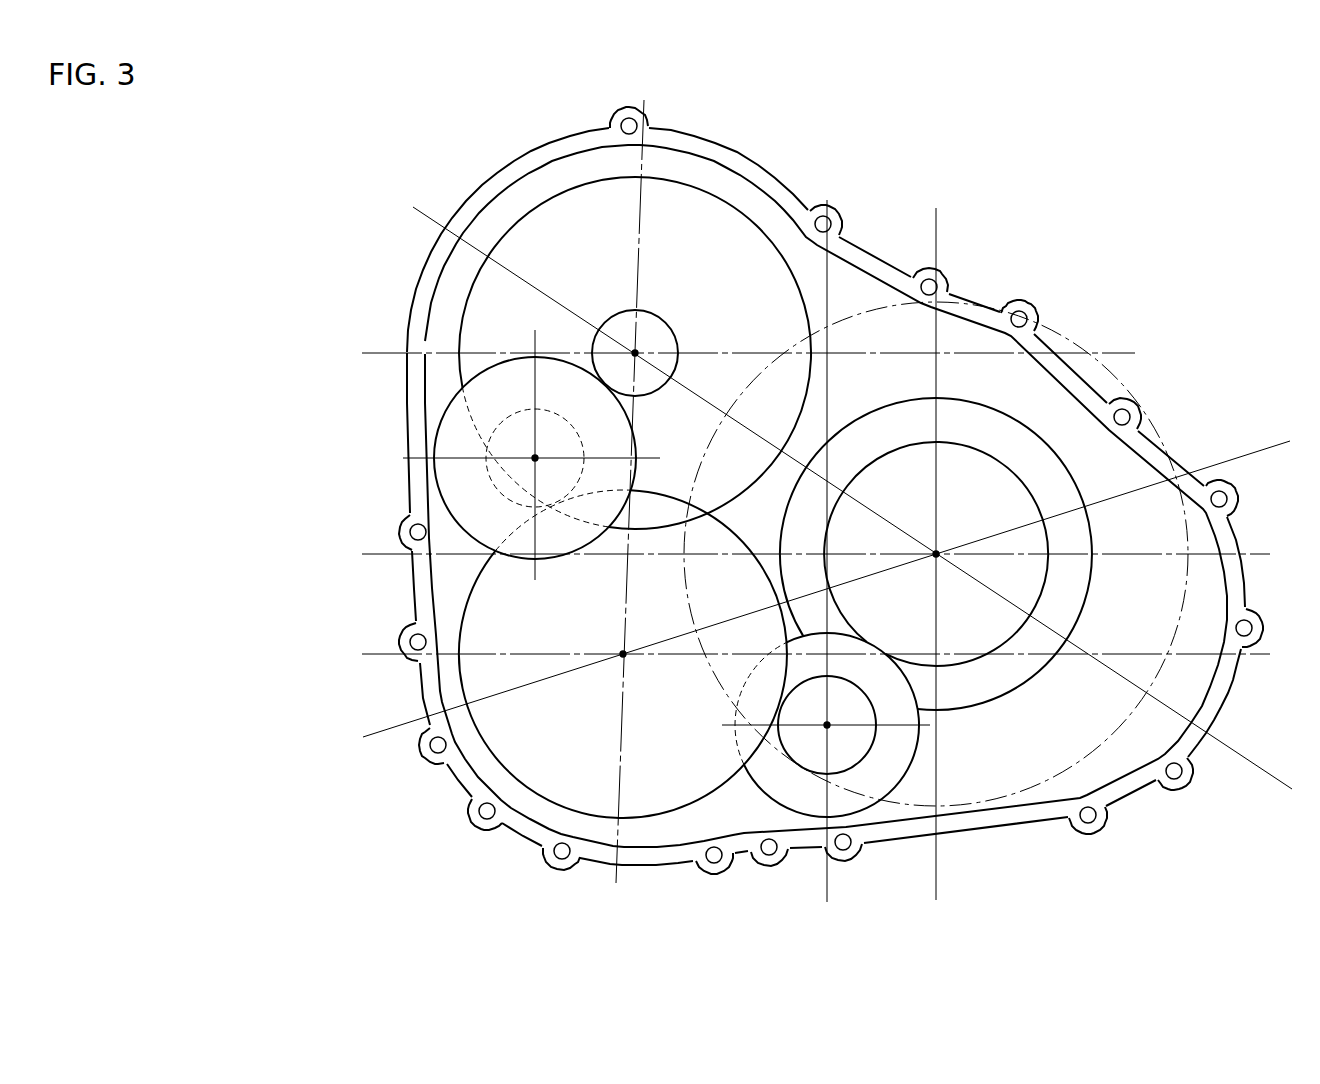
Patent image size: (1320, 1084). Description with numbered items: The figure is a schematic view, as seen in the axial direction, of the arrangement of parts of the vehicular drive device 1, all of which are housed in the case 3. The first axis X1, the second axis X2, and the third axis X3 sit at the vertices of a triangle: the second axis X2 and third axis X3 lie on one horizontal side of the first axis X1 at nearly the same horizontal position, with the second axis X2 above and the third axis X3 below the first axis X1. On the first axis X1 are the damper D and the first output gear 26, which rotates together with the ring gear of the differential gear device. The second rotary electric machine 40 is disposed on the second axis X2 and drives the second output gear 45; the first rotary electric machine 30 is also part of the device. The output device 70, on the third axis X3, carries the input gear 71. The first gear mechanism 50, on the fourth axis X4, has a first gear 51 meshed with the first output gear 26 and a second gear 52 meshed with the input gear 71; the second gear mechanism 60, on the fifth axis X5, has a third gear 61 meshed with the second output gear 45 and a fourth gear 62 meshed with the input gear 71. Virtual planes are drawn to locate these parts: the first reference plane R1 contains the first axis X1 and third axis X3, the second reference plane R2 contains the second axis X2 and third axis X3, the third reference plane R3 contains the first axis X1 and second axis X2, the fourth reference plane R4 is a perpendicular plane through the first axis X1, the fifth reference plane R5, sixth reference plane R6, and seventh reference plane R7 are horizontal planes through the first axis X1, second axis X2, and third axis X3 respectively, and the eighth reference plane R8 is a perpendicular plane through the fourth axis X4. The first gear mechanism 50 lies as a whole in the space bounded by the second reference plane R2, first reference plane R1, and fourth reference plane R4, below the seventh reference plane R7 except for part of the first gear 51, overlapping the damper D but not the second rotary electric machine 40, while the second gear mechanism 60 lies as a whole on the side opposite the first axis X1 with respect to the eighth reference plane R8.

The vehicular drive device 1 is at (322, 251).
The case 3 is at (906, 262).
The first output gear 26 is at (1043, 600).
The first rotary electric machine 30 is at (1033, 412).
The second rotary electric machine 40 is at (727, 191).
The second output gear 45 is at (657, 326).
The first gear mechanism 50 is at (918, 790).
The first gear 51 is at (882, 797).
The second gear 52 is at (878, 738).
The second gear mechanism 60 is at (421, 491).
The third gear 61 is at (457, 397).
The fourth gear 62 is at (484, 444).
The output device 70 is at (498, 780).
The input gear 71 is at (466, 604).
The damper D is at (1195, 574).
The first reference plane R1 is at (380, 733).
The second reference plane R2 is at (648, 192).
The third reference plane R3 is at (418, 200).
The fourth reference plane R4 is at (940, 880).
The fifth reference plane R5 is at (377, 553).
The sixth reference plane R6 is at (372, 352).
The seventh reference plane R7 is at (377, 654).
The eighth reference plane R8 is at (826, 874).
The first axis X1 is at (938, 545).
The second axis X2 is at (645, 348).
The third axis X3 is at (617, 648).
The fourth axis X4 is at (822, 735).
The fifth axis X5 is at (538, 455).